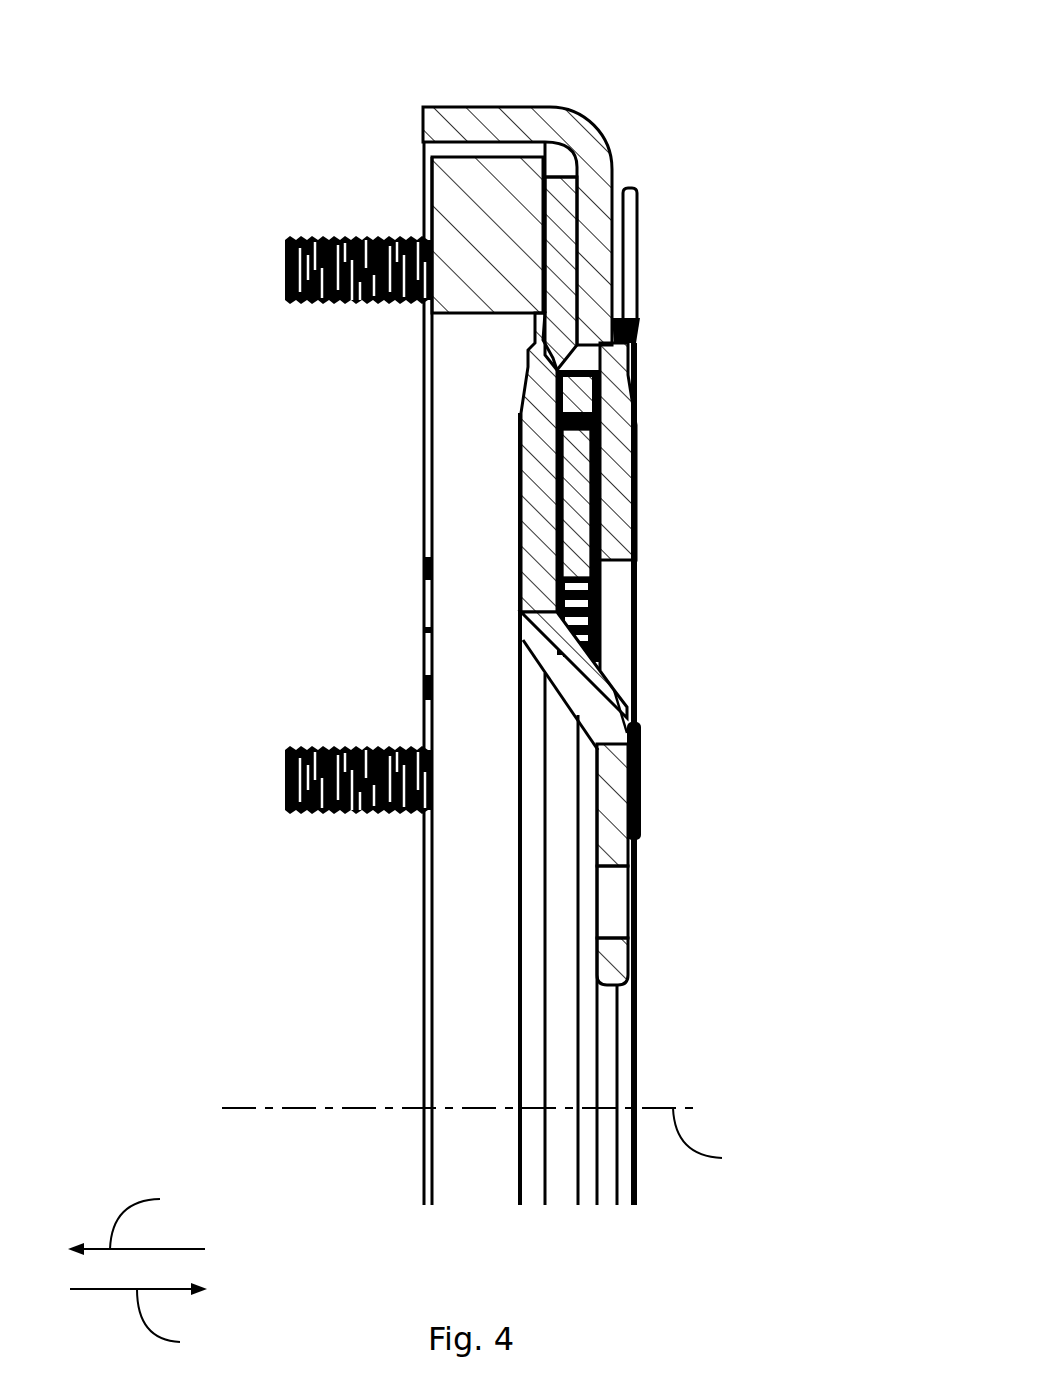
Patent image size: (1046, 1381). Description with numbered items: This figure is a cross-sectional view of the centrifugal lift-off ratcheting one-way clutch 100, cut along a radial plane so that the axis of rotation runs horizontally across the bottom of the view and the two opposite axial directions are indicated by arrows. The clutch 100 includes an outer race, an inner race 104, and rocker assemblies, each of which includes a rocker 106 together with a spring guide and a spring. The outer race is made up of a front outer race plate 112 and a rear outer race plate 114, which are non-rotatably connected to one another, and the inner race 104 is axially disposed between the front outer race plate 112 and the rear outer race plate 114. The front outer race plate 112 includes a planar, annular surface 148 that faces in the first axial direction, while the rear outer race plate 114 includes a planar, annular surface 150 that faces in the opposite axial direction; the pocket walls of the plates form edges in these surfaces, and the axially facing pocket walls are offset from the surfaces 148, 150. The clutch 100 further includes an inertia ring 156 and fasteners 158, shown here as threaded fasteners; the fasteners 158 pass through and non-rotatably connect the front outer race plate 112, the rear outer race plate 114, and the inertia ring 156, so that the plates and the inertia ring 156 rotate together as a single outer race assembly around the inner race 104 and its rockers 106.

The centrifugal lift-off ratcheting one-way clutch 100 is at (460, 681).
The front outer race plate 112 is at (487, 193).
The inertia ring 156 is at (441, 210).
The fasteners 158 is at (676, 243).
The planar annular surface 148 is at (699, 423).
The planar annular surface 150 is at (438, 462).
The inner race 104 is at (661, 516).
The rocker 106 is at (664, 410).
The rear outer race plate 114 is at (663, 679).